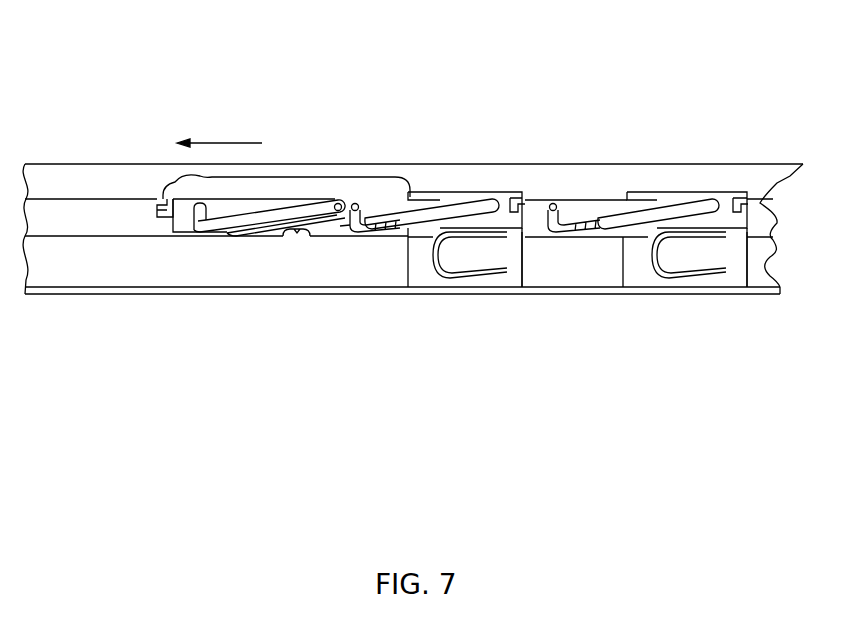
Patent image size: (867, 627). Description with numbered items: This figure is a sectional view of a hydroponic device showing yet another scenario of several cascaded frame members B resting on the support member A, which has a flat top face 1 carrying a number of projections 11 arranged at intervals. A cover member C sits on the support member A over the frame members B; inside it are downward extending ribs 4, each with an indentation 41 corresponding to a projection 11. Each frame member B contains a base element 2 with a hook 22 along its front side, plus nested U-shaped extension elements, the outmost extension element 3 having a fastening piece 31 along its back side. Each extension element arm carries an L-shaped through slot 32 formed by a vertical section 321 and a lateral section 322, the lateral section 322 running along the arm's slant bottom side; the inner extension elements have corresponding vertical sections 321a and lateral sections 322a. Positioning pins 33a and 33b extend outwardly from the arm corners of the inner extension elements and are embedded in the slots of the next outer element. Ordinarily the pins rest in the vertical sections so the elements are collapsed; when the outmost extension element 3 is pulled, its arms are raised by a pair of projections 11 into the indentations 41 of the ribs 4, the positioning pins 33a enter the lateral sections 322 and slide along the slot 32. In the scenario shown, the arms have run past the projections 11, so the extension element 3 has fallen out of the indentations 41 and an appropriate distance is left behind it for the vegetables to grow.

The flat top face 1 is at (85, 237).
The indentation 41 is at (180, 183).
The rib 4 is at (120, 195).
The outmost extension element 3 is at (250, 225).
The vertical section 321 is at (190, 226).
The L-shaped through slot 32 is at (272, 204).
The lateral section 322 is at (278, 230).
The projection 11 is at (318, 237).
The positioning pin 33a is at (336, 203).
The positioning pin 33b is at (357, 203).
The frame member B is at (441, 191).
The hook 22 is at (519, 196).
The cover member C is at (467, 164).
The base element 2 is at (470, 280).
The lateral section 322a is at (440, 262).
The vertical section 321a is at (345, 237).
The fastening piece 31 is at (525, 240).
The support member A is at (398, 297).